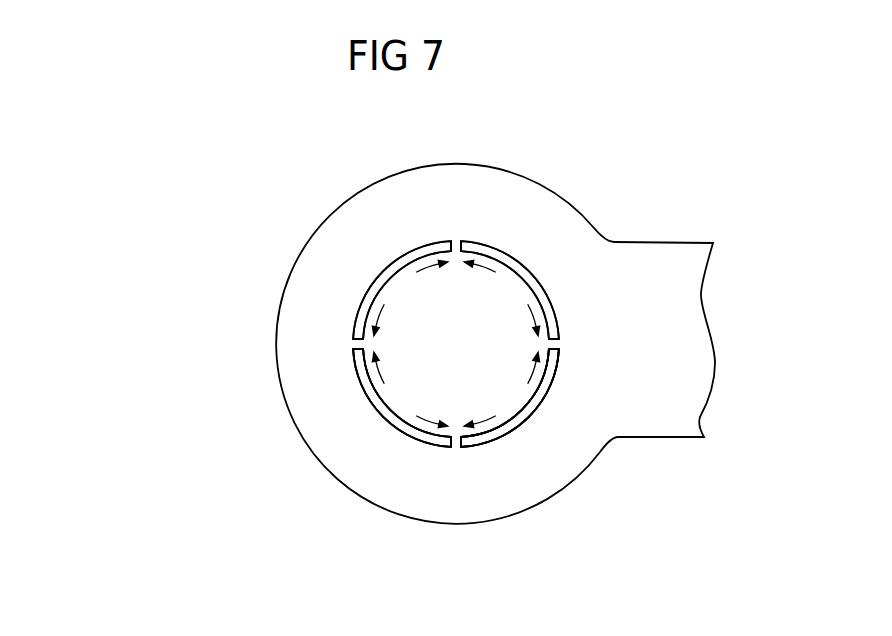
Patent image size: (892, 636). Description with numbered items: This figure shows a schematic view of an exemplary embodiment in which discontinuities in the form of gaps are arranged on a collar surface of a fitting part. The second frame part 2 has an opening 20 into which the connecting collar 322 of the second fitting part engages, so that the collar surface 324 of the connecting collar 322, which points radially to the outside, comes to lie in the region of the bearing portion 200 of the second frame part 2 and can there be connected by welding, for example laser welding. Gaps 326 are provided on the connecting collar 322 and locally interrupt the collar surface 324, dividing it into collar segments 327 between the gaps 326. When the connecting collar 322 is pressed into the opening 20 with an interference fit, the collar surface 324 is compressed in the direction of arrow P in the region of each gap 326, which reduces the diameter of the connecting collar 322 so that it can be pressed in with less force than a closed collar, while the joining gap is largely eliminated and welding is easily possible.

The second frame part 2 is at (475, 510).
The opening 20 is at (522, 425).
The bearing portion 200 is at (536, 402).
The connecting collar 322 is at (507, 428).
The collar surface 324 is at (420, 442).
The gap 326 is at (456, 239).
The ring segment 327 is at (393, 258).
The arrow P is at (378, 318).